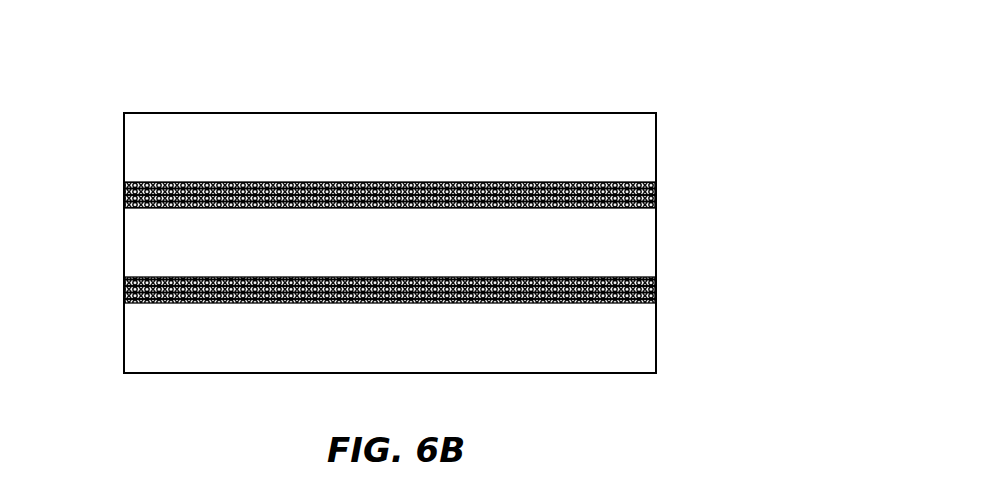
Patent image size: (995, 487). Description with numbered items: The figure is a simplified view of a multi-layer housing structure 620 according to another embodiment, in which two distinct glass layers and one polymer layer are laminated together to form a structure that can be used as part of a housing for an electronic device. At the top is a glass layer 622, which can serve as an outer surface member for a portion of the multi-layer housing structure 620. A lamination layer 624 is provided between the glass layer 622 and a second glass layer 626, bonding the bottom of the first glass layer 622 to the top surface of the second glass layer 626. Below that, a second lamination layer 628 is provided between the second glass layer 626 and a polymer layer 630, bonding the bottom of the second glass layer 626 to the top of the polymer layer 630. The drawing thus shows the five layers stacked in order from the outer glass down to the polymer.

The multi-layer housing structure 620 is at (603, 80).
The glass layer 622 is at (182, 125).
The lamination layer 624 is at (123, 195).
The second glass layer 626 is at (123, 243).
The second lamination layer 628 is at (123, 290).
The polymer layer 630 is at (182, 360).